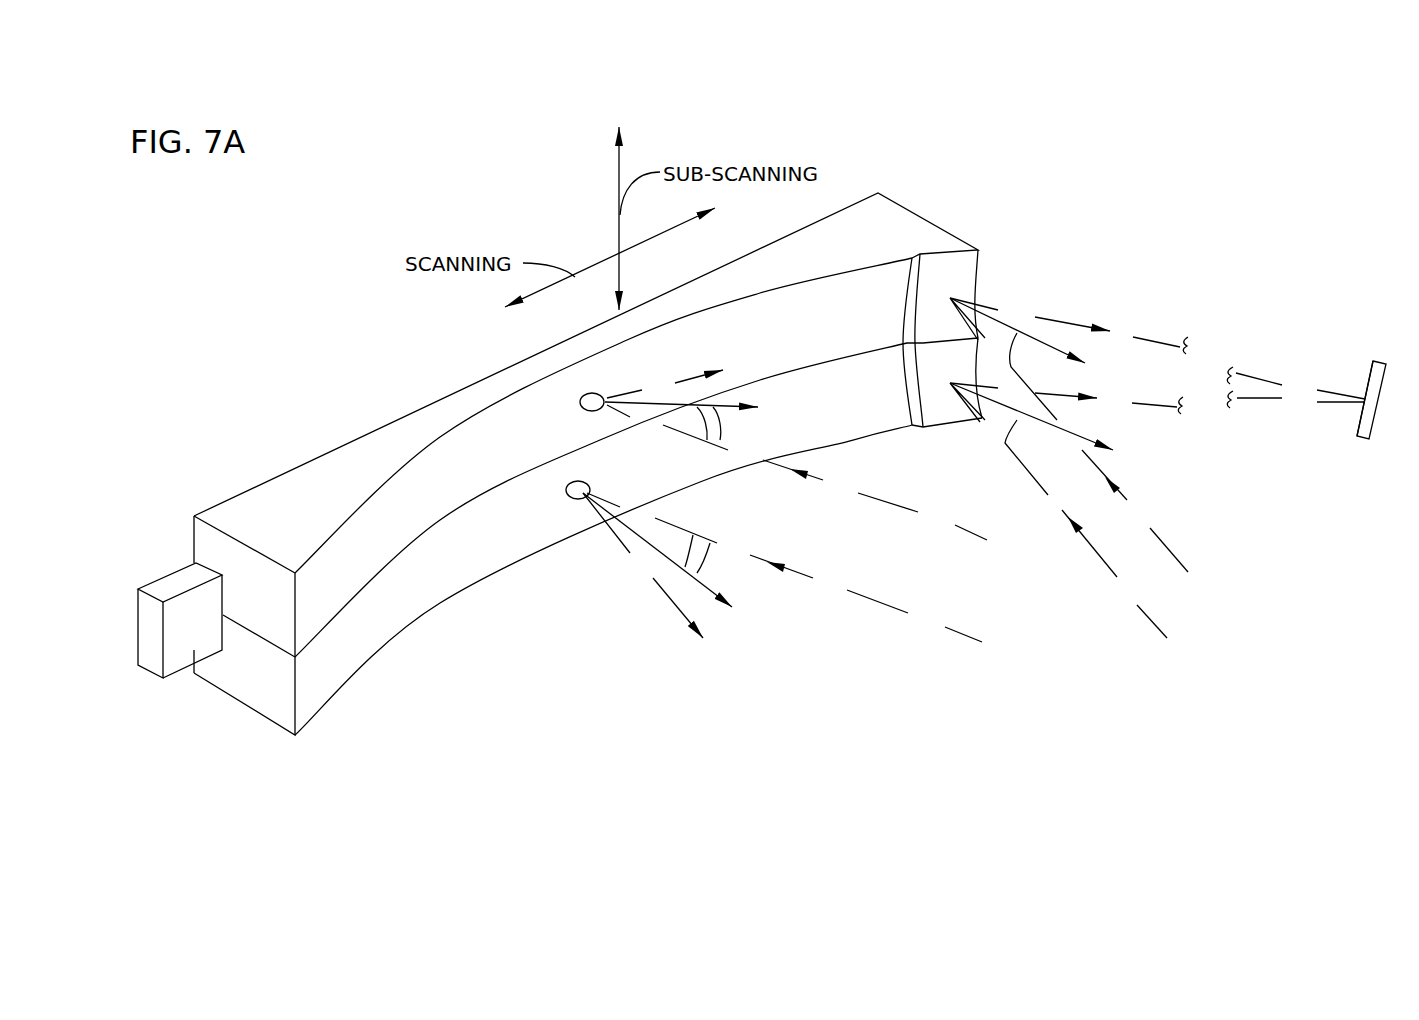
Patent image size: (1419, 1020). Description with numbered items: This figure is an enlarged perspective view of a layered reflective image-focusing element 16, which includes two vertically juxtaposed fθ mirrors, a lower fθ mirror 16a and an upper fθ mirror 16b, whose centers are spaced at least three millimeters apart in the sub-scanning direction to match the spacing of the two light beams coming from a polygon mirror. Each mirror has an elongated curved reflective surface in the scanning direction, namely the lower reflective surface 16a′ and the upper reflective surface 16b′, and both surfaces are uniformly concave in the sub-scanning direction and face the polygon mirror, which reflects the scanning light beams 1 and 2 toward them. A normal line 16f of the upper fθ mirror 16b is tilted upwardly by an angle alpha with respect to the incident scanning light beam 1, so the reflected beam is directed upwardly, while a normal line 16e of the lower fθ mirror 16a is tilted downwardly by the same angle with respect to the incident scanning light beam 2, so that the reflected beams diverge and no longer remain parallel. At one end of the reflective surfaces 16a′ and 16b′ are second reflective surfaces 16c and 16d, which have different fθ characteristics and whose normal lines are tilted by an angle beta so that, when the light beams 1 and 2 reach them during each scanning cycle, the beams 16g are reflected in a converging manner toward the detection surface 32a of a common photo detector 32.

The reflective image-focusing element 16 is at (278, 505).
The lower fθ mirror 16a is at (267, 680).
The upper fθ mirror 16b is at (253, 615).
The reflective surface of the lower fθ mirror 16a′ is at (340, 635).
The reflective surface of the upper fθ mirror 16b′ is at (372, 523).
The lower second reflective surface 16c is at (942, 410).
The upper second reflective surface 16d is at (965, 282).
The normal line of the lower fθ mirror 16e is at (663, 557).
The normal line of the upper fθ mirror 16f is at (698, 440).
The emitted light beam 16g is at (1028, 338).
The common photo detector 32 is at (1383, 377).
The detection surface 32a is at (1368, 390).
The scanning light beam 1 is at (913, 513).
The scanning light beam 2 is at (885, 607).